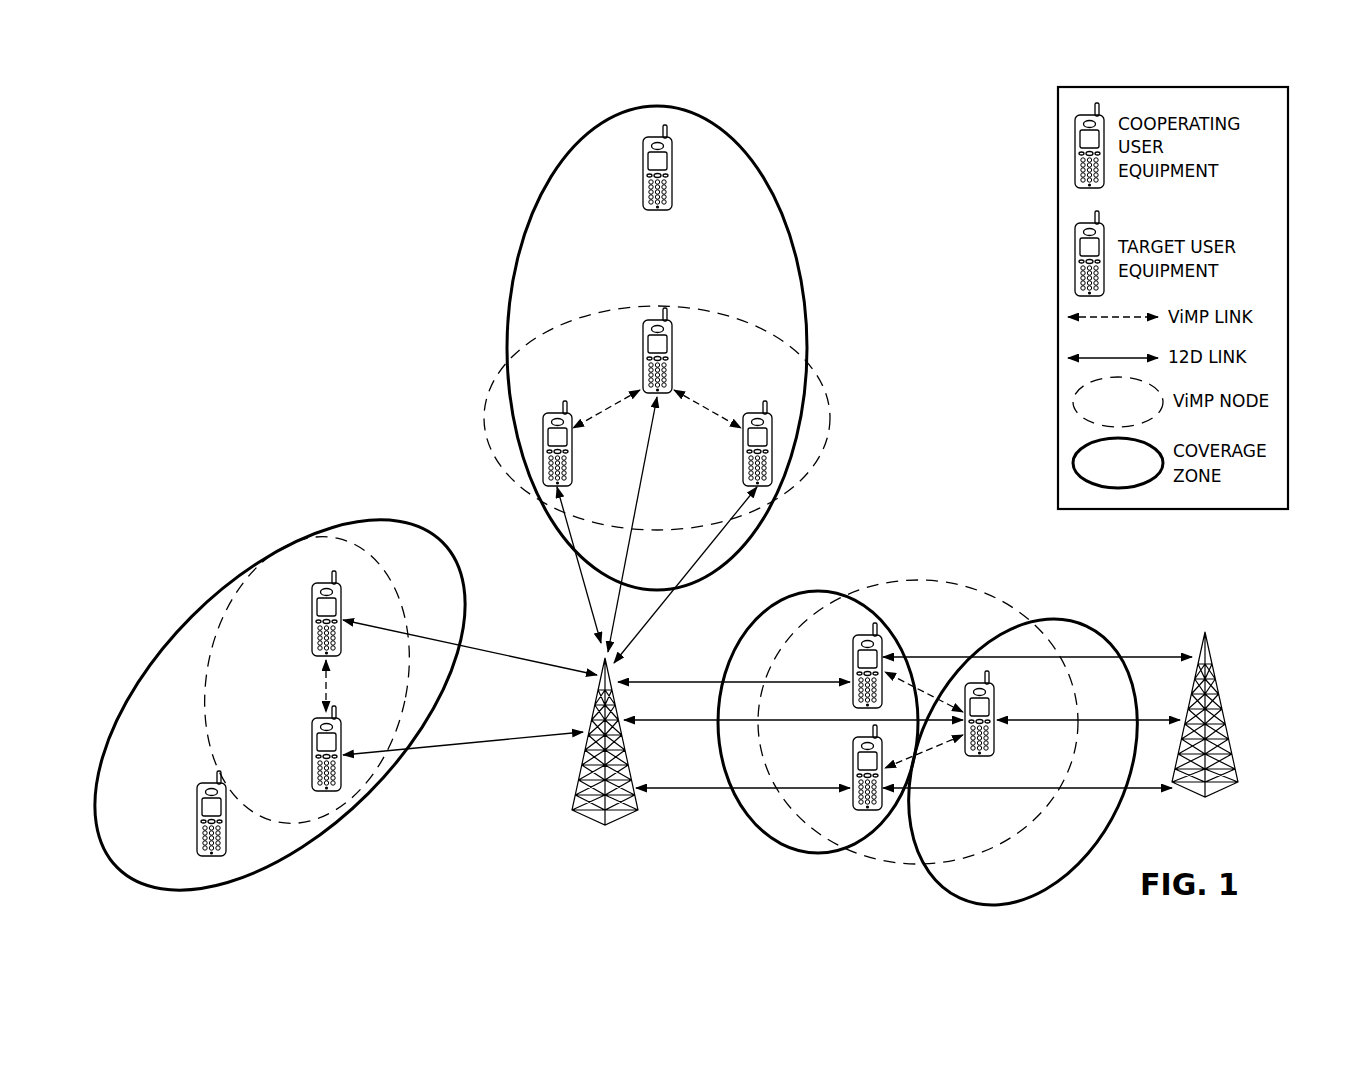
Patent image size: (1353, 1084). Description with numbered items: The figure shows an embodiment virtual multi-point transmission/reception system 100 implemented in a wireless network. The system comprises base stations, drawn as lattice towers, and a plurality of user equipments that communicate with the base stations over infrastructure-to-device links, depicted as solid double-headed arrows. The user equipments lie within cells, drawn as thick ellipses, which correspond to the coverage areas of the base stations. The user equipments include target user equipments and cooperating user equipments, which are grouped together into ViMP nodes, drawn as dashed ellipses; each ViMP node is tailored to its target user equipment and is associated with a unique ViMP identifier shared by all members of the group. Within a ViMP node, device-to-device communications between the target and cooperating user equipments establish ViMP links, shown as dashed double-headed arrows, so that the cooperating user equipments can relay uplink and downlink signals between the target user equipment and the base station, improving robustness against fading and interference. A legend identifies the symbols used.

The ViMP transmission/reception system 100 is at (353, 248).